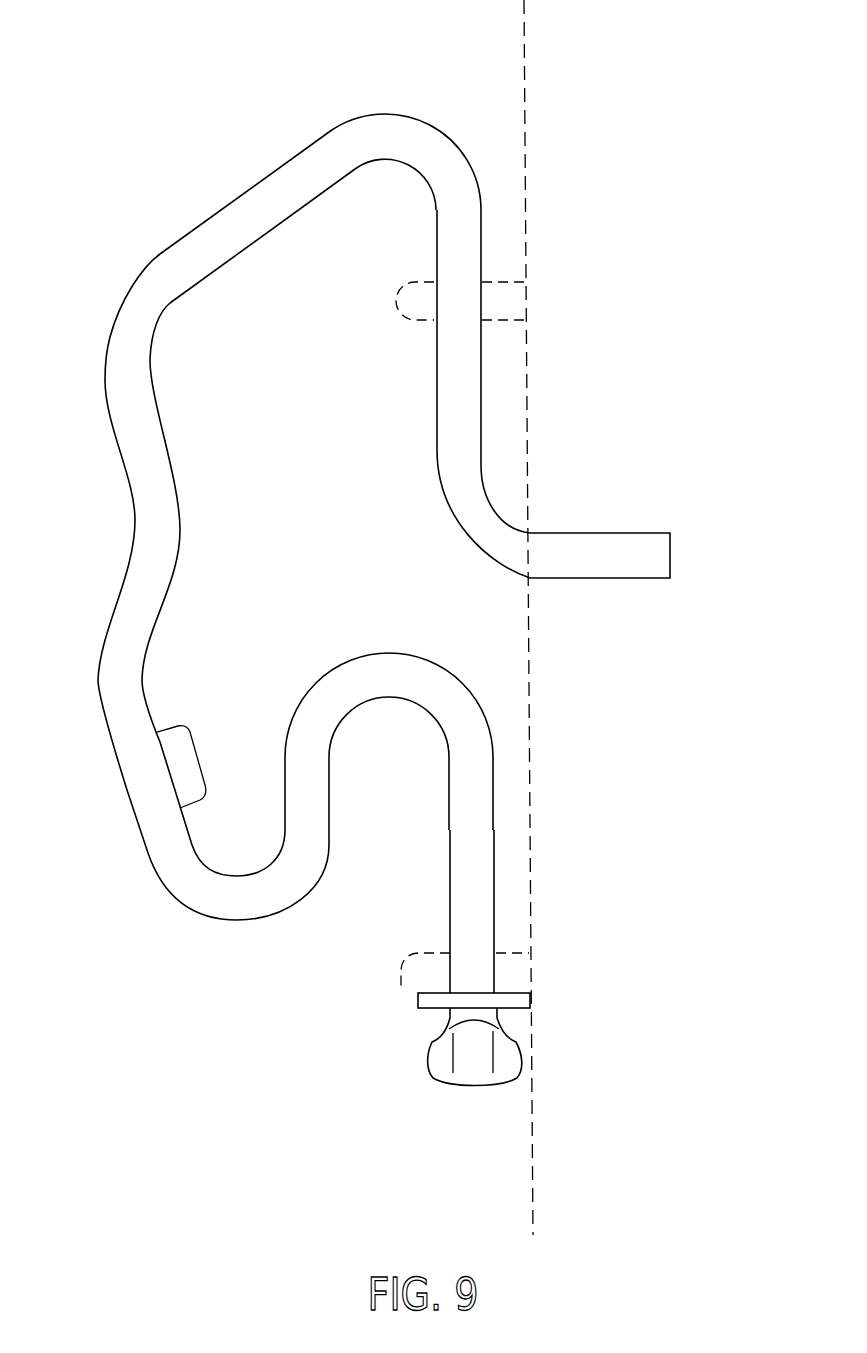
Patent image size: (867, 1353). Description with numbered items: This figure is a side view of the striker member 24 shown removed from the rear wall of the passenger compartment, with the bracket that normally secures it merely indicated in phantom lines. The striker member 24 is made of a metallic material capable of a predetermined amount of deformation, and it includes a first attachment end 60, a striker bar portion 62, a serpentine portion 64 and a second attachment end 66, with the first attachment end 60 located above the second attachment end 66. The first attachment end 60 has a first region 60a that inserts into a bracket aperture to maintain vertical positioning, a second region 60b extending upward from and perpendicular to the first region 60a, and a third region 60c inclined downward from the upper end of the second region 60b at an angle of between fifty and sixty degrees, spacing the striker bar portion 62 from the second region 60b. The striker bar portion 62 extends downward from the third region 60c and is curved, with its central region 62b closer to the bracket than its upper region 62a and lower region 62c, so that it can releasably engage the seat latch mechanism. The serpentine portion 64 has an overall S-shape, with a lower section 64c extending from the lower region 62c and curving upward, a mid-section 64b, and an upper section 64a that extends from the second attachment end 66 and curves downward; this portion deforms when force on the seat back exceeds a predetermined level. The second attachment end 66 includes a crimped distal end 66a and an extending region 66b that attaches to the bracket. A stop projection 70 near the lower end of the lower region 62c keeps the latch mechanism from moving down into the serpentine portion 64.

The striker member 24 is at (647, 261).
The first attachment end 60 is at (638, 534).
The first region 60a is at (600, 586).
The second region 60b is at (423, 389).
The third region 60c is at (263, 217).
The striker bar portion 62 is at (122, 457).
The upper region 62a is at (175, 445).
The central region 62b is at (179, 585).
The lower region 62c is at (182, 728).
The serpentine portion 64 is at (344, 655).
The upper section 64a is at (389, 709).
The mid-section 64b is at (422, 791).
The lower section 64c is at (176, 939).
The second attachment end 66 is at (432, 1048).
The crimped distal end 66a is at (475, 1068).
The extending region 66b is at (531, 873).
The stop projection 70 is at (188, 786).